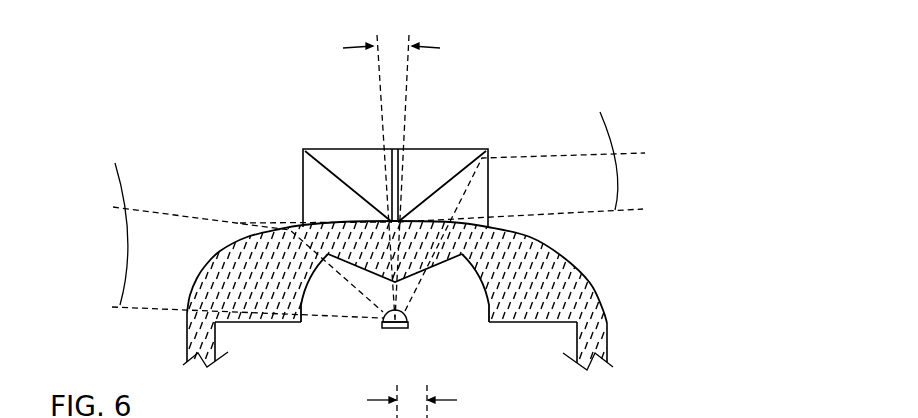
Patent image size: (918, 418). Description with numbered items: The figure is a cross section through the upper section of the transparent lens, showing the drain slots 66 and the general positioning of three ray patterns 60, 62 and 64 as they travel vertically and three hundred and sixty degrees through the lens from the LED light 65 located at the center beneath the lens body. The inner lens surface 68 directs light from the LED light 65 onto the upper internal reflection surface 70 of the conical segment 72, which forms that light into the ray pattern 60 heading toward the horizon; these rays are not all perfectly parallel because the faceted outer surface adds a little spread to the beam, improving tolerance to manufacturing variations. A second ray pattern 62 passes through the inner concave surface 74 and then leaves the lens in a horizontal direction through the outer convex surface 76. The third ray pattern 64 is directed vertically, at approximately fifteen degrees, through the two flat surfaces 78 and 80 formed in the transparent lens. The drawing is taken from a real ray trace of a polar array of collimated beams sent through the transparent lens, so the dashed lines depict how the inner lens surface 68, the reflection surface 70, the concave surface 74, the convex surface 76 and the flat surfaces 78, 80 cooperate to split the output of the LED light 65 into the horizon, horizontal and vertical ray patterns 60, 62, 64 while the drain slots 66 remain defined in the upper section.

The ray pattern 60 is at (591, 155).
The ray pattern 62 is at (145, 208).
The ray pattern 64 is at (377, 75).
The LED light 65 is at (407, 317).
The drain slots 66 is at (391, 147).
The inner lens surface 68 is at (423, 277).
The upper internal reflection surface 70 is at (465, 170).
The conical segment 72 is at (337, 175).
The inner concave surface 74 is at (303, 303).
The outer convex surface 76 is at (218, 258).
The flat surface 78 is at (388, 212).
The flat surface 80 is at (385, 312).